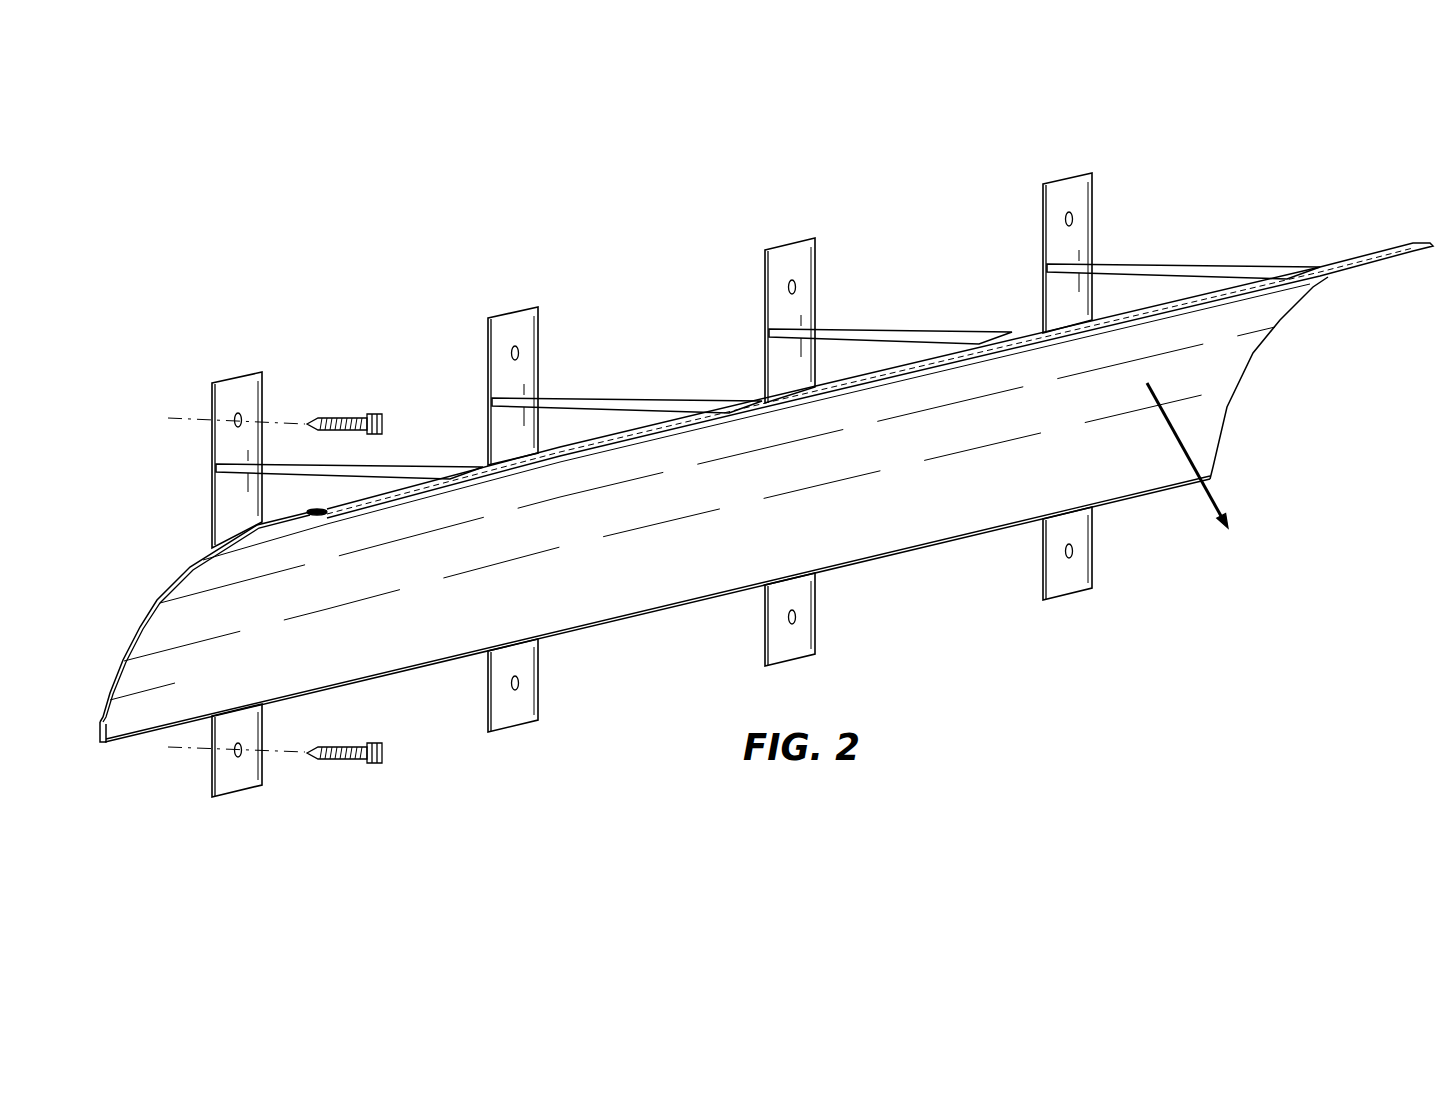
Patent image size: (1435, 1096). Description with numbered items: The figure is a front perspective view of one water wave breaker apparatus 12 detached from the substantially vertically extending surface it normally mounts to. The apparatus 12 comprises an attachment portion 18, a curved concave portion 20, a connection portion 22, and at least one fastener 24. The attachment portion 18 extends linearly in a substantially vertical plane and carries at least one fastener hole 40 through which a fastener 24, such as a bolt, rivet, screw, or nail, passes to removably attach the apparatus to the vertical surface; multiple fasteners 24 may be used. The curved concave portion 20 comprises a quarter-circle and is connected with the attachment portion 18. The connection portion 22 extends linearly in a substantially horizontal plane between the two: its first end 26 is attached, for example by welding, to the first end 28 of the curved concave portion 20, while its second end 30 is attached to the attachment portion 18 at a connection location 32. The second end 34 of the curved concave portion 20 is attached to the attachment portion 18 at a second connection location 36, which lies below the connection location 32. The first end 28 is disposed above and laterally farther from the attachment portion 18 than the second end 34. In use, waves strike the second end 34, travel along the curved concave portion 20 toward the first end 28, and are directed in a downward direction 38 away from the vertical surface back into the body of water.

The water wave breaker apparatus 12 is at (636, 247).
The attachment portion 18 is at (246, 372).
The curved concave portion 20 is at (1183, 382).
The connection portion 22 is at (387, 458).
The fastener 24 is at (351, 416).
The first end of the connection portion 26 is at (457, 467).
The first end of the curved concave portion 28 is at (1195, 307).
The second end of the connection portion 30 is at (260, 462).
The connection location 32 is at (227, 462).
The second end of the curved concave portion 34 is at (127, 723).
The second connection location 36 is at (262, 707).
The downward direction 38 is at (1212, 497).
The fastener hole 40 is at (238, 412).